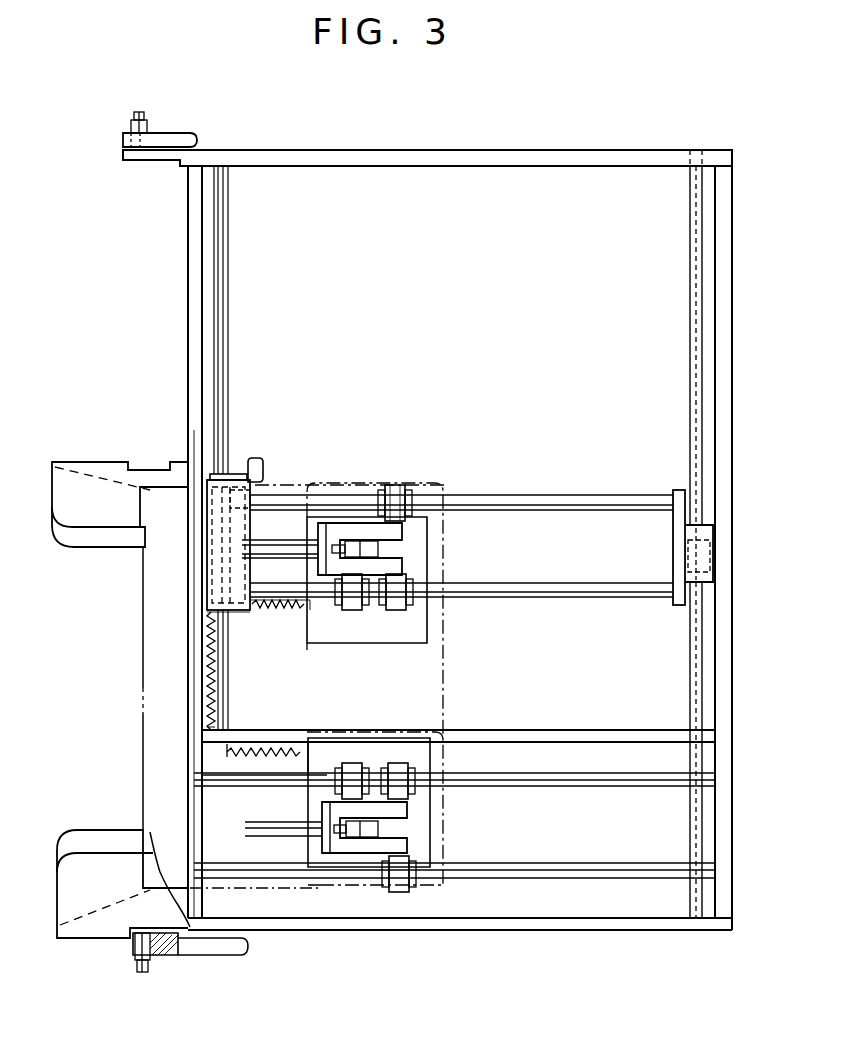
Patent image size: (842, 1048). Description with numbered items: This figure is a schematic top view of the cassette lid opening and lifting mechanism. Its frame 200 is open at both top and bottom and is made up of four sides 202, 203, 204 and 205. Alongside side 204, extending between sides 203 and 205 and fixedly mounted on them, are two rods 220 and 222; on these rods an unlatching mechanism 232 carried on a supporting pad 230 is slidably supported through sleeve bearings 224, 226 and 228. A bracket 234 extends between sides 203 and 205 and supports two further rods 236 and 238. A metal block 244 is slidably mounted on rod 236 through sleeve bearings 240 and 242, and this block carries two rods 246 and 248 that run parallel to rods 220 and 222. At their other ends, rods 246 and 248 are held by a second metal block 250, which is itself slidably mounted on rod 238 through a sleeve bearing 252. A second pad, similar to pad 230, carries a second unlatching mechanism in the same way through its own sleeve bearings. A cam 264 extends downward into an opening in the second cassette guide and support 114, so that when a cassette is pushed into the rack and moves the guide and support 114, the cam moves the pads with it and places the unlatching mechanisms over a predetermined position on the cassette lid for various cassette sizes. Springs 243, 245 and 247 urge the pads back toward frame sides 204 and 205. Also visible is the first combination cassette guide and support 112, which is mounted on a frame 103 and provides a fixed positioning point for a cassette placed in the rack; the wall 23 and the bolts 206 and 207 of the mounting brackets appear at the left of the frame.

The frame 200 is at (640, 285).
The frame side 202 is at (586, 150).
The frame side 203 is at (722, 504).
The frame side 204 is at (524, 932).
The frame side 205 is at (188, 262).
The upper bolt 206 is at (145, 118).
The lower bolt 207 is at (143, 973).
The upper mounting bracket 103 is at (186, 138).
The first combination cassette guide and support 112 is at (90, 940).
The second cassette guide and support 114 is at (95, 466).
The wall 23 is at (124, 747).
The rod 220 is at (540, 868).
The rod 222 is at (548, 788).
The sleeve bearing 224 is at (400, 488).
The sleeve bearing 226 is at (408, 766).
The sleeve bearing 228 is at (352, 764).
The supporting pad 230 is at (432, 740).
The unlatching mechanism 232 is at (406, 846).
The bracket 234 is at (562, 730).
The rod 236 is at (230, 368).
The rod 238 is at (690, 318).
The sleeve bearing 240 is at (272, 488).
The sleeve bearing 242 is at (250, 612).
The spring 243 is at (207, 676).
The metal block 244 is at (207, 557).
The spring 245 is at (264, 750).
The rod 246 is at (600, 482).
The spring 247 is at (280, 637).
The rod 248 is at (584, 592).
The second metal block 250 is at (710, 531).
The sleeve bearing 252 is at (710, 568).
The cam 264 is at (255, 470).